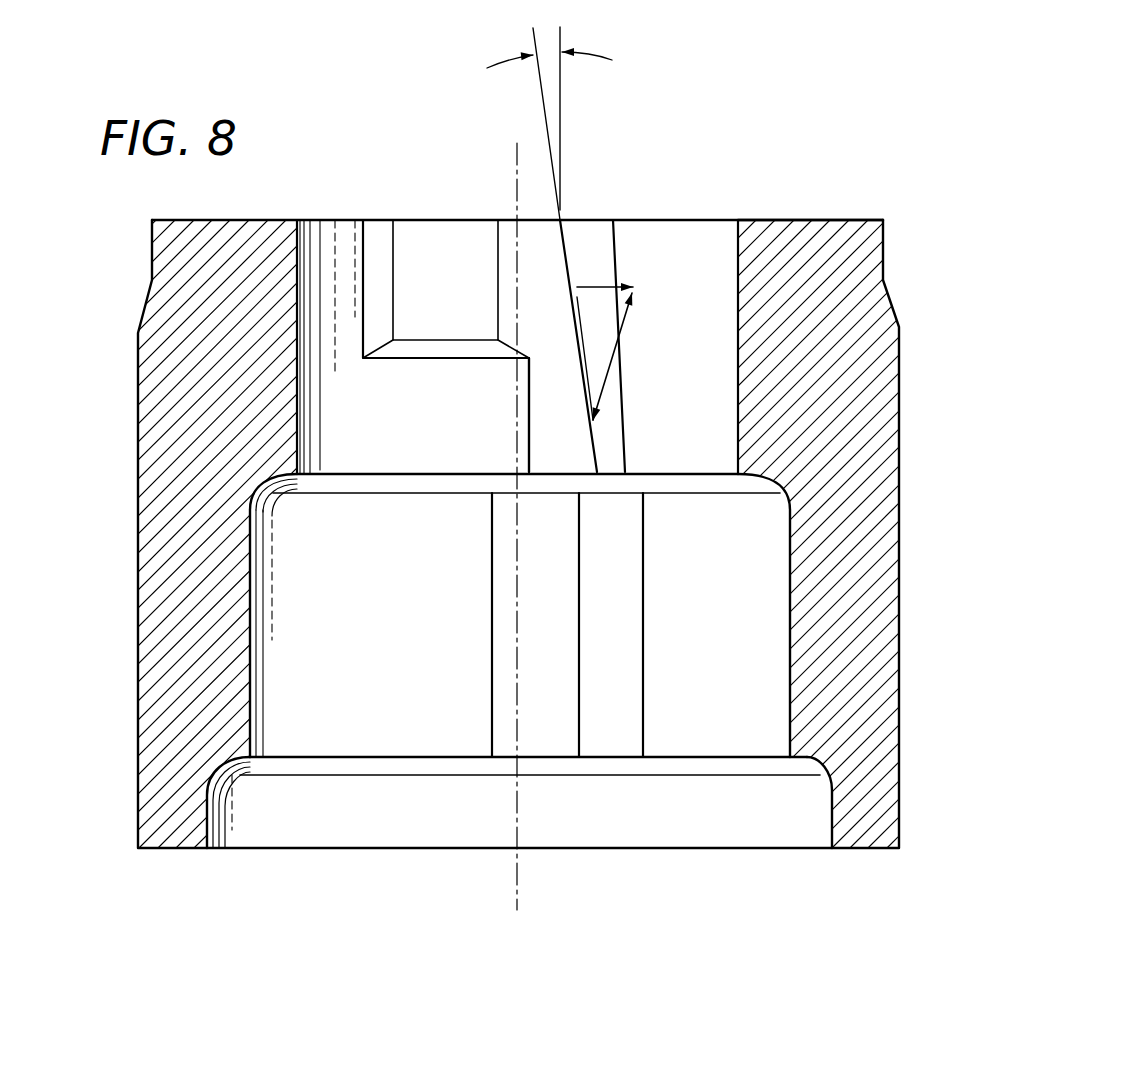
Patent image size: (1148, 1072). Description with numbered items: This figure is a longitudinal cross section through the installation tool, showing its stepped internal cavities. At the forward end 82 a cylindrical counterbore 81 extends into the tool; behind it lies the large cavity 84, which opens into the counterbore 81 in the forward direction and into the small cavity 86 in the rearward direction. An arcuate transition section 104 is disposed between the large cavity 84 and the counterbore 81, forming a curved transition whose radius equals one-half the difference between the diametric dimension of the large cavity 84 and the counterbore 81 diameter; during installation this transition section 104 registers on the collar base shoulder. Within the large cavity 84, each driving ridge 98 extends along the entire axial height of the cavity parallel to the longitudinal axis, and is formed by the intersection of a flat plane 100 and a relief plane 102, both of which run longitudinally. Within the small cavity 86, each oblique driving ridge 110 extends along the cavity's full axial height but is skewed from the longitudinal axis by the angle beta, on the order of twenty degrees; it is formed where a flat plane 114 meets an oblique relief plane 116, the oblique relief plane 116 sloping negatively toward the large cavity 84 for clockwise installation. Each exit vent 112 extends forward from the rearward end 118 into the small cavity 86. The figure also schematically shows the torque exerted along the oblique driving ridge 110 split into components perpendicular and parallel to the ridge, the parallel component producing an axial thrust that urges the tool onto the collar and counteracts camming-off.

The cylindrical counterbore 81 is at (685, 807).
The forward end 82 is at (860, 851).
The large cavity 84 is at (390, 728).
The small cavity 86 is at (673, 258).
The driving ridge 98 is at (582, 738).
The flat plane 100 is at (568, 623).
The relief plane 102 is at (633, 623).
The arcuate transition section 104 is at (240, 768).
The oblique driving ridge 110 is at (582, 370).
The exit vent 112 is at (435, 317).
The flat plane 114 is at (580, 454).
The oblique relief plane 116 is at (590, 240).
The rearward end 118 is at (825, 220).